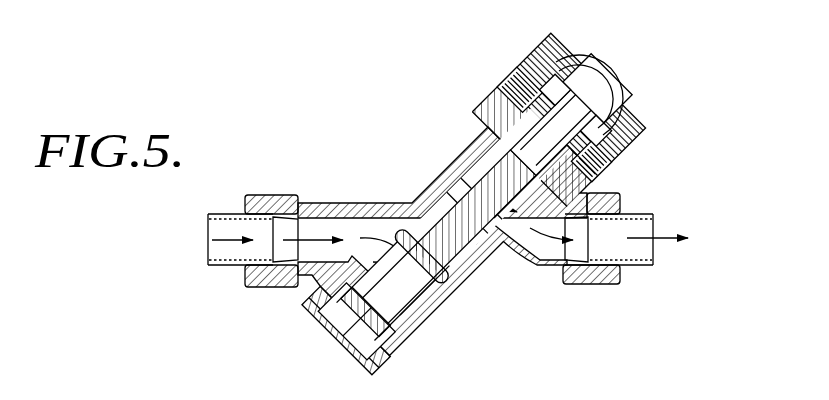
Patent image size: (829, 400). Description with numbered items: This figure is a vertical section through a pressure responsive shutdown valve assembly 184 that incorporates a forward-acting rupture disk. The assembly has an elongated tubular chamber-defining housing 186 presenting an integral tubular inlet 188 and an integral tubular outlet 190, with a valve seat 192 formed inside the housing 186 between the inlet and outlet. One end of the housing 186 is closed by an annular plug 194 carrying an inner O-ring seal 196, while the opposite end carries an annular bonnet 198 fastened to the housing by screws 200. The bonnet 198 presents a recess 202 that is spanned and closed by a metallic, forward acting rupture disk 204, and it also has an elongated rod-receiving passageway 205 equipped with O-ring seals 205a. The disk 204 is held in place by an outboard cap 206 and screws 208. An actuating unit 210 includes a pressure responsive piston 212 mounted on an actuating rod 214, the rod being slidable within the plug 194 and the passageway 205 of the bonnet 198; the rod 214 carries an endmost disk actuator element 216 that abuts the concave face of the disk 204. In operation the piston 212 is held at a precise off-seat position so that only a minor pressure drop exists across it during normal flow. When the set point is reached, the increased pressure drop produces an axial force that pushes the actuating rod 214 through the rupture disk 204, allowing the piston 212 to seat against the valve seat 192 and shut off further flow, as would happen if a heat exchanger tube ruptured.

The shutdown valve assembly 184 is at (637, 100).
The housing 186 is at (455, 108).
The inlet 188 is at (313, 203).
The outlet 190 is at (541, 266).
The valve seat 192 is at (418, 222).
The annular plug 194 is at (362, 355).
The O-ring seal 196 is at (412, 345).
The annular bonnet 198 is at (603, 157).
The screws 200 is at (519, 70).
The recess 202 is at (574, 75).
The rupture disk 204 is at (605, 83).
The rod-receiving passageway 205 is at (500, 138).
The O-ring seals 205a is at (482, 147).
The outboard cap 206 is at (548, 43).
The screws 208 is at (640, 130).
The actuating unit 210 is at (500, 258).
The pressure responsive piston 212 is at (437, 318).
The actuating rod 214 is at (333, 340).
The disk actuator element 216 is at (585, 98).